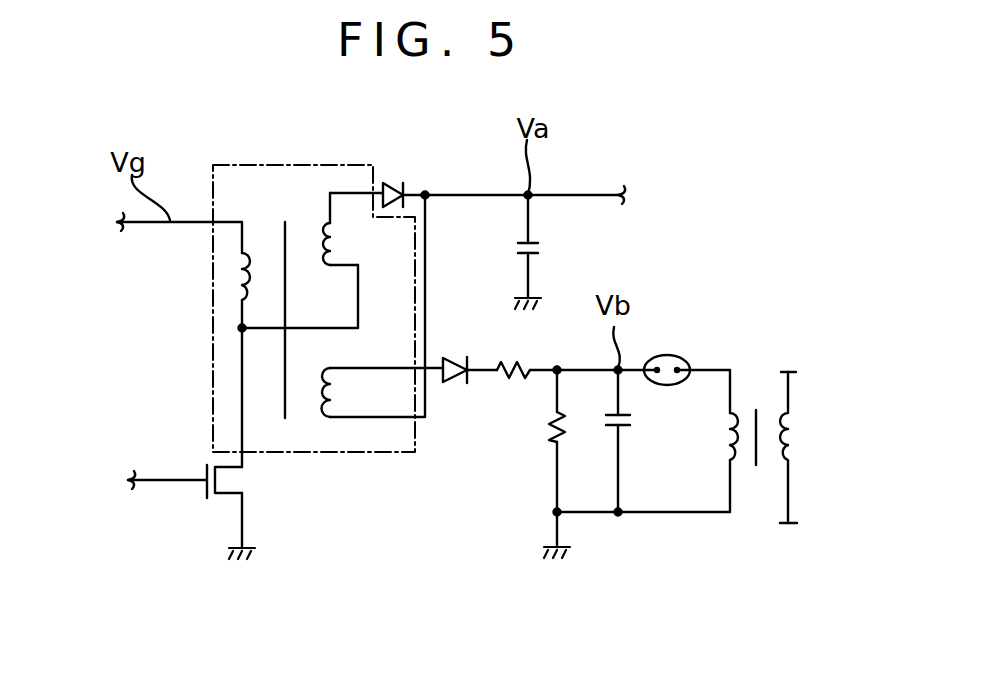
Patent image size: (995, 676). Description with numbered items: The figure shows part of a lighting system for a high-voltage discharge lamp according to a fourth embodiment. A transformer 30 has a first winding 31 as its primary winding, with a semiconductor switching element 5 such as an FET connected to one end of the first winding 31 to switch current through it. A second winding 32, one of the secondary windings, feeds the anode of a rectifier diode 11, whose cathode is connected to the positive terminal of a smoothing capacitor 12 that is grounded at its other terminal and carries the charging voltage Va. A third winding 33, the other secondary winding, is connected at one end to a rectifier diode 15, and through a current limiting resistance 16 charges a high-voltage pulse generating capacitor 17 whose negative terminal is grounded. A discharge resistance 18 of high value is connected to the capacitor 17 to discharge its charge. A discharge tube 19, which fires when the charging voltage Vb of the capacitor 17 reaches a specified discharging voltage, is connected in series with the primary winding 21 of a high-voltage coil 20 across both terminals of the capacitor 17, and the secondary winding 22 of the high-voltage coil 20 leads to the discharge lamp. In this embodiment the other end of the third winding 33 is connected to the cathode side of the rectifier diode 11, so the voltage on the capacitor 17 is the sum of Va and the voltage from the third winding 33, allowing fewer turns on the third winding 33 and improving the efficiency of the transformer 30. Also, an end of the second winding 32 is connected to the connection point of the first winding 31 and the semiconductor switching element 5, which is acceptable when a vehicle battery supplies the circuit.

The semiconductor switching element 5 is at (228, 480).
The rectifier diode 11 is at (392, 182).
The smoothing capacitor 12 is at (540, 250).
The rectifier diode 15 is at (457, 355).
The current limiting resistance 16 is at (507, 380).
The high-voltage pulse generating capacitor 17 is at (632, 423).
The discharge resistance 18 is at (547, 425).
The discharge tube 19 is at (670, 357).
The high-voltage coil 20 is at (766, 379).
The primary winding 21 is at (727, 432).
The secondary winding 22 is at (787, 433).
The transformer 30 is at (307, 165).
The first winding 31 is at (252, 273).
The second winding 32 is at (318, 245).
The third winding 33 is at (320, 393).